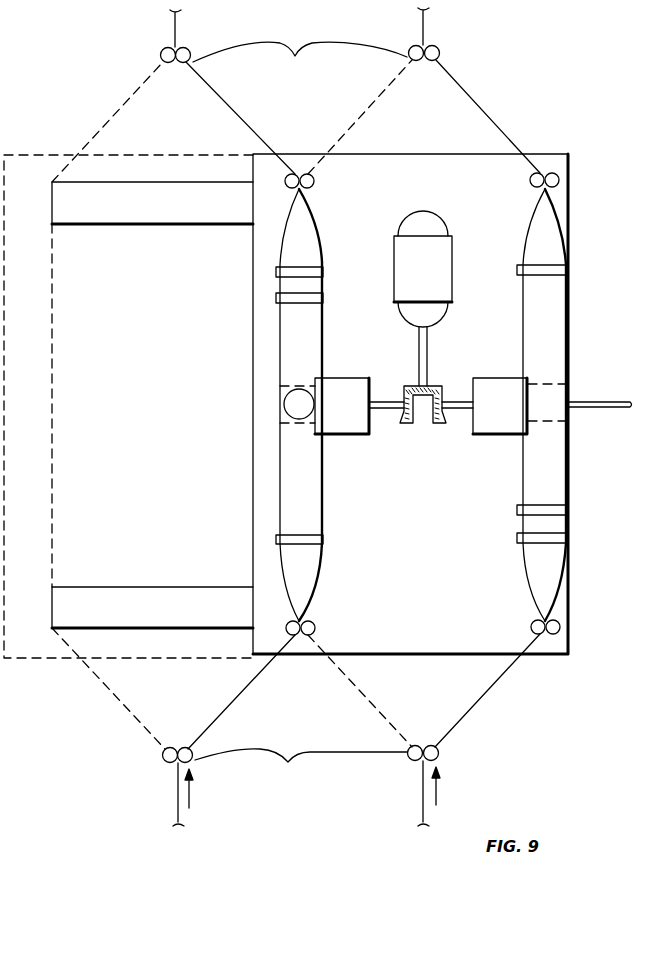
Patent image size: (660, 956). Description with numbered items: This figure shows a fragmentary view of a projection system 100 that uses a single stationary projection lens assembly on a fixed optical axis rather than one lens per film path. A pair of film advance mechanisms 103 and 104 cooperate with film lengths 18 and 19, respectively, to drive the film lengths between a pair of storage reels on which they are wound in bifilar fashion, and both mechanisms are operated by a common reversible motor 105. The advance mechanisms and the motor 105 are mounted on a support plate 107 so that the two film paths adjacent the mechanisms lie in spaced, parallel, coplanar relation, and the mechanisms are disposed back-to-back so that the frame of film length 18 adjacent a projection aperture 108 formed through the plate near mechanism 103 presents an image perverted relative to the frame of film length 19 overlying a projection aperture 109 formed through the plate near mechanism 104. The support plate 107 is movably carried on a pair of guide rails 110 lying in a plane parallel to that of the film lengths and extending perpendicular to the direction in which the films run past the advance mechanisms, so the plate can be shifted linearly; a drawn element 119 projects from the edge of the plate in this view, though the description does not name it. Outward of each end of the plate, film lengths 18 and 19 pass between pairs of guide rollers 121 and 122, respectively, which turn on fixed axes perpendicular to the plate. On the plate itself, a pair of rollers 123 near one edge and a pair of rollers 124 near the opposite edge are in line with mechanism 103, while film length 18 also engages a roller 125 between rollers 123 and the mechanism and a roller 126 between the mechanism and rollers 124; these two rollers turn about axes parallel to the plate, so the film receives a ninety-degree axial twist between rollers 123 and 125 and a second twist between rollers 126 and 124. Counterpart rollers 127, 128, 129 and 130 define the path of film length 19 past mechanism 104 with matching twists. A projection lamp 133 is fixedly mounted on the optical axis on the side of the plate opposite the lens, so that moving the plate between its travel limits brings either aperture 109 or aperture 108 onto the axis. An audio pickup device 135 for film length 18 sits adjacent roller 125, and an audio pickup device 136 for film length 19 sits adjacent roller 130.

The projection system 100 is at (602, 92).
The film advance mechanism 103 is at (470, 432).
The film advance mechanism 104 is at (353, 437).
The reversible motor 105 is at (452, 250).
The support plate 107 is at (558, 657).
The projection aperture 108 is at (575, 386).
The projection aperture 109 is at (280, 395).
The guide rails 110 is at (130, 210).
The drive shaft 119 is at (608, 410).
The guide rollers 121 is at (246, 727).
The guide rollers 122 is at (246, 95).
The guide rollers 123 is at (532, 629).
The guide rollers 124 is at (530, 178).
The guide roller 125 is at (568, 538).
The guide roller 126 is at (548, 280).
The guide rollers 127 is at (320, 626).
The guide rollers 128 is at (316, 181).
The guide roller 129 is at (283, 539).
The guide roller 130 is at (283, 271).
The projection lamp 133 is at (282, 408).
The audio pickup device 135 is at (568, 508).
The audio pickup device 136 is at (278, 297).
The film length 18 is at (556, 488).
The film length 19 is at (288, 492).